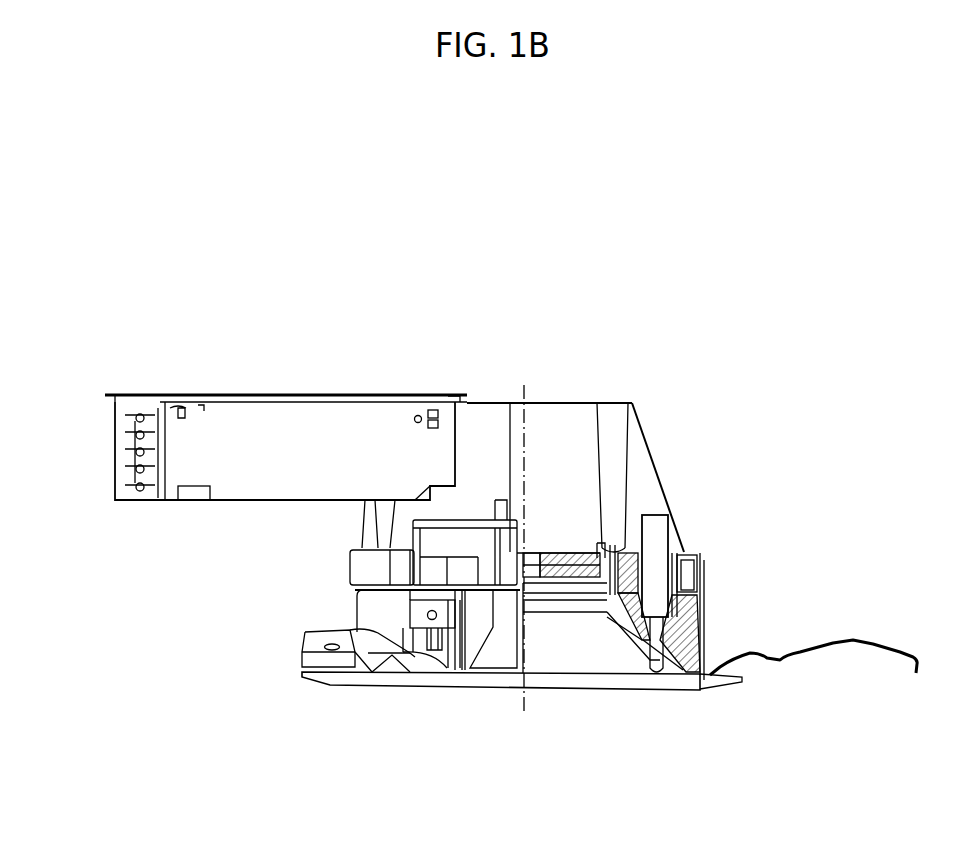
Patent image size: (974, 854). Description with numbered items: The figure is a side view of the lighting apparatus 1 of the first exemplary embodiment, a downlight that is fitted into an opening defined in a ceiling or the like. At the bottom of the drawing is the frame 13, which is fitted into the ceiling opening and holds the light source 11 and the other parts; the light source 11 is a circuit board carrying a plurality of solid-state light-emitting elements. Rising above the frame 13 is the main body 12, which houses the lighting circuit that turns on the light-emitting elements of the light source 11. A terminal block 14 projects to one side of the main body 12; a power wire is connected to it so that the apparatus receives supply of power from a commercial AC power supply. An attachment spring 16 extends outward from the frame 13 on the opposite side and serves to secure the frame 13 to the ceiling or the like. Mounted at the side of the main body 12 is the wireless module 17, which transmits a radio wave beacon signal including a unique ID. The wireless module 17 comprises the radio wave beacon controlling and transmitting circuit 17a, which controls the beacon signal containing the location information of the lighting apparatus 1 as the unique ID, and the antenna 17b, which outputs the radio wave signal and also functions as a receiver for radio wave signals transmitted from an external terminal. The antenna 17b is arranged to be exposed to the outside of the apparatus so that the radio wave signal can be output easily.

The lighting apparatus 1 is at (70, 358).
The light source 11 is at (557, 612).
The main body 12 is at (666, 480).
The frame 13 is at (392, 688).
The terminal block 14 is at (300, 395).
The attachment spring 16 is at (853, 640).
The wireless module 17 is at (780, 514).
The radio wave beacon controlling and transmitting circuit 17a is at (658, 550).
The antenna 17b is at (655, 641).